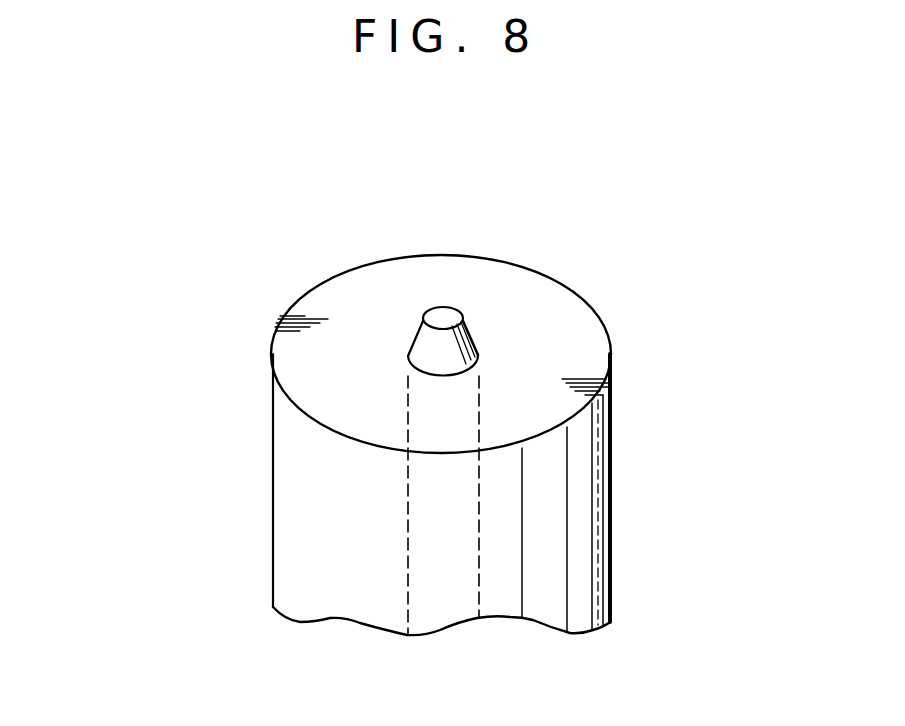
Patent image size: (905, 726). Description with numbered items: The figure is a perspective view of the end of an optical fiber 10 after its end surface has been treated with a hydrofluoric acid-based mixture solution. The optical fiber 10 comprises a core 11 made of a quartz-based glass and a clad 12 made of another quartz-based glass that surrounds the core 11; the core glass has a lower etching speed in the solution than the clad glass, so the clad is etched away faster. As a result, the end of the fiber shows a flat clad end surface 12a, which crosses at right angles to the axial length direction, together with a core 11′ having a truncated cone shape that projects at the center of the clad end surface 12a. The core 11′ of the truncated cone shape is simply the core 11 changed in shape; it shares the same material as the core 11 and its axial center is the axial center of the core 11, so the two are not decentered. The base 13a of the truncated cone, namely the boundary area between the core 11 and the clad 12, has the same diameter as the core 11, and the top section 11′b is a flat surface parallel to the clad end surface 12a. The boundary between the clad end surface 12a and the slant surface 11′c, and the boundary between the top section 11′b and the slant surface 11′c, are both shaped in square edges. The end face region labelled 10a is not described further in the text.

The optical fiber 10 is at (684, 385).
The end face 10a is at (395, 210).
The core 11 is at (457, 507).
The core of truncated cone shape 11′ is at (402, 312).
The top section 11′b is at (443, 320).
The slant surface 11′c is at (468, 330).
The clad 12 is at (583, 473).
The clad end surface 12a is at (542, 333).
The base 13a is at (408, 355).